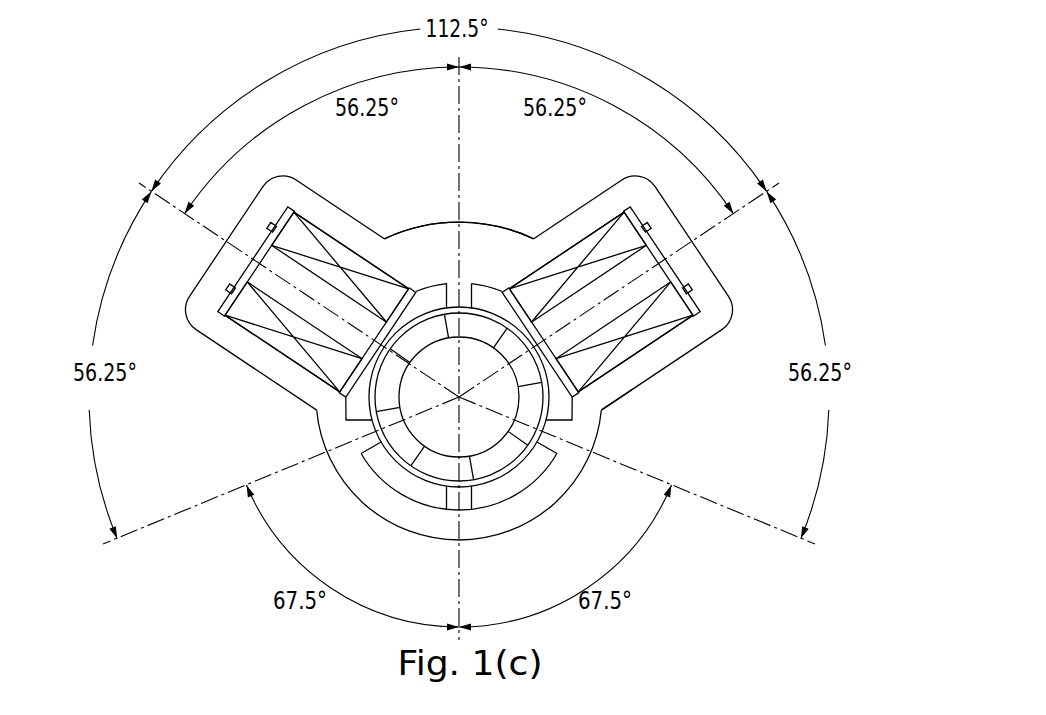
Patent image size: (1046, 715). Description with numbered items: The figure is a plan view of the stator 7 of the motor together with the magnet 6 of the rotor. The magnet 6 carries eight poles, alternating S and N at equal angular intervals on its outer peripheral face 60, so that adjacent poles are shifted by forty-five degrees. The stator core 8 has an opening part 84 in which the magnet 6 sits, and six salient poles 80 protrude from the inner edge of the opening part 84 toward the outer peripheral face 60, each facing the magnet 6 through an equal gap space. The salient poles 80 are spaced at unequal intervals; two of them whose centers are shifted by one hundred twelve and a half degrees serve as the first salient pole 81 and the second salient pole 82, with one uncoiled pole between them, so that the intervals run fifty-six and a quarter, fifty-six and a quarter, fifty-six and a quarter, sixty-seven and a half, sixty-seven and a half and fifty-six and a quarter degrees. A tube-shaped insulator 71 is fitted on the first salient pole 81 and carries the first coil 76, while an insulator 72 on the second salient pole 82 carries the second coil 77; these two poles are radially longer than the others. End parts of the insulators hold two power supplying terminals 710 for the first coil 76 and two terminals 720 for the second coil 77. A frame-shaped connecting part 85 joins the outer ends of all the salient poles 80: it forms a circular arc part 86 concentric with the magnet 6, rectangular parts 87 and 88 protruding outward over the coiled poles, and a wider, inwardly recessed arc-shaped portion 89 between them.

The magnet 6 is at (494, 472).
The outer peripheral face 60 is at (517, 460).
The stator 7 is at (650, 395).
The insulator 71 is at (217, 305).
The insulator 72 is at (705, 303).
The first coil 76 is at (293, 345).
The second coil 77 is at (640, 350).
The power supplying terminals 710 is at (292, 207).
The power supplying terminals 720 is at (626, 207).
The stator core 8 is at (500, 238).
The salient poles 80 is at (466, 290).
The first salient pole 81 is at (262, 352).
The second salient pole 82 is at (692, 330).
The opening part 84 is at (382, 490).
The connecting part 85 is at (563, 483).
The circular arc part 86 is at (577, 460).
The rectangular part 87 is at (215, 262).
The rectangular part 88 is at (703, 262).
The portion between the rectangular parts 89 is at (438, 268).